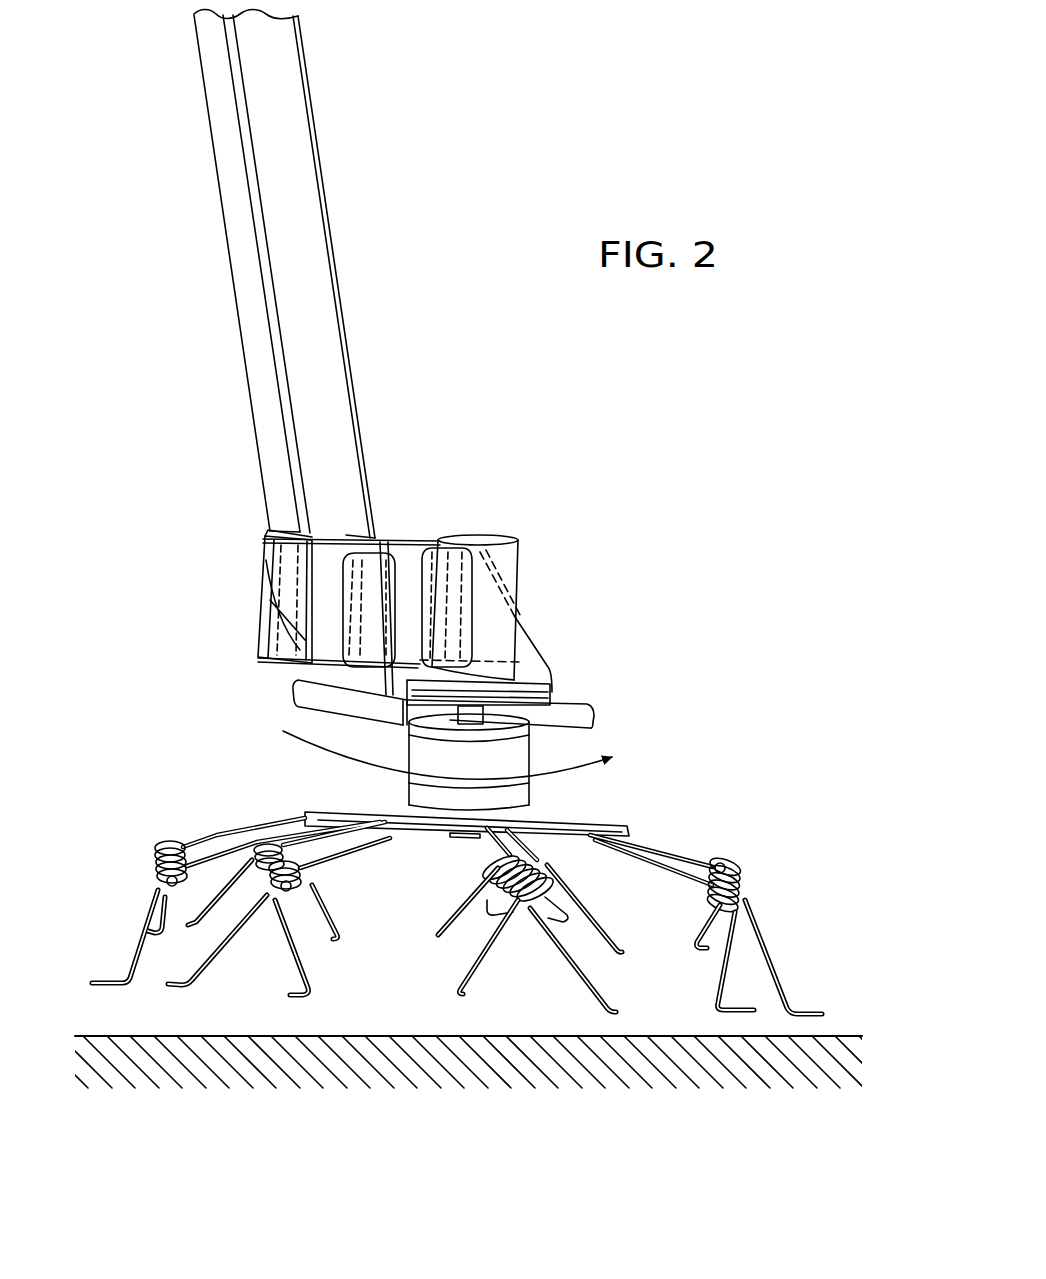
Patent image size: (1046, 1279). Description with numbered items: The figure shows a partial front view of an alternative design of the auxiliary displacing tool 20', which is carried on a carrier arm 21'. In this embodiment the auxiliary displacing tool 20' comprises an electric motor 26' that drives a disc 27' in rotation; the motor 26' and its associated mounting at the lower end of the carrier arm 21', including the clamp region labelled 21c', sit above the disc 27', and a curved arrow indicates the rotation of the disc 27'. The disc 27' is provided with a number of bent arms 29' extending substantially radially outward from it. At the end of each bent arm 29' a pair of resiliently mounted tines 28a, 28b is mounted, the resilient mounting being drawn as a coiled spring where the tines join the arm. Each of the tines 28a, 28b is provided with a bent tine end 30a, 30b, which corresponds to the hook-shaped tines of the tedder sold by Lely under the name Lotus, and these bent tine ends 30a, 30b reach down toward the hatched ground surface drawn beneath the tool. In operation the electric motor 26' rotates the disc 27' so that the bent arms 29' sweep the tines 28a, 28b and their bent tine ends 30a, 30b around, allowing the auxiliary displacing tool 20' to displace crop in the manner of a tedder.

The auxiliary displacing tool 20' is at (473, 594).
The carrier arm 21' is at (239, 274).
The pole clamp 21c' is at (442, 505).
The electric motor 26' is at (490, 551).
The disc 27' is at (524, 715).
The tine 28a is at (575, 972).
The tine 28b is at (590, 917).
The bent arm 29' is at (439, 790).
The bent tine end 30a is at (754, 1008).
The bent tine end 30b is at (822, 1014).